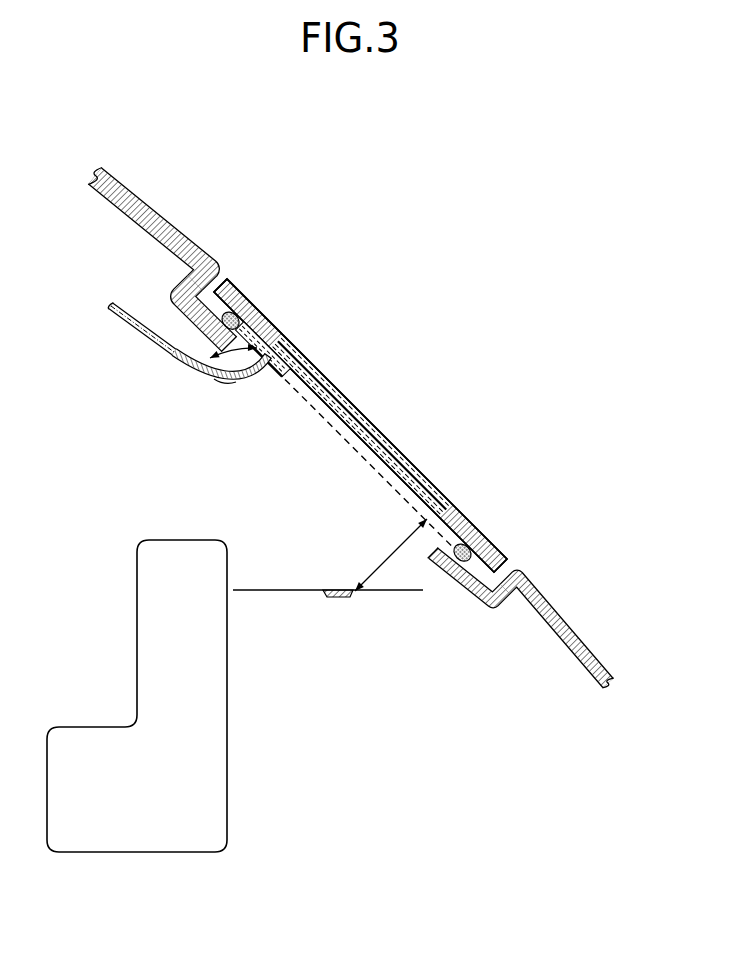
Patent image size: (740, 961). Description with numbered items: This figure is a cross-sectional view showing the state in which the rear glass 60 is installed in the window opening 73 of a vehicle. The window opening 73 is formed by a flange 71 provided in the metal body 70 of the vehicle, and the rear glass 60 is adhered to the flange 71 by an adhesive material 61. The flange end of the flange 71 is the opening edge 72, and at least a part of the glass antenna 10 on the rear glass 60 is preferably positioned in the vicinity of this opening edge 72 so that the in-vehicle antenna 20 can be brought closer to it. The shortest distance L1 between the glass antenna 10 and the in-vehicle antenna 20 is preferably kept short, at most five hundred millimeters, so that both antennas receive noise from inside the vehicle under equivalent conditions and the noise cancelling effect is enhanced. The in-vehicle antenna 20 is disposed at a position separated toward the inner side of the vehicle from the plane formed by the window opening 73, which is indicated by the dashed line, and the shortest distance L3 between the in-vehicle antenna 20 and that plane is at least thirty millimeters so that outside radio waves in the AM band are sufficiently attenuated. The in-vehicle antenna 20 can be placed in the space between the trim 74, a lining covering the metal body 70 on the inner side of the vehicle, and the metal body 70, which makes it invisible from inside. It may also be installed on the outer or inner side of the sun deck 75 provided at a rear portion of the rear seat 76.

The glass antenna 10 is at (285, 370).
The in-vehicle antenna 20 is at (200, 352).
The rear glass 60 is at (337, 385).
The adhesive material 61 is at (241, 316).
The metal body 70 is at (155, 211).
The flange 71 is at (172, 306).
The opening edge 72 is at (236, 377).
The window opening 73 is at (357, 451).
The trim 74 is at (143, 340).
The sun deck 75 is at (264, 590).
The rear seat 76 is at (137, 590).
The shortest distance between glass antenna and in-vehicle antenna L1 is at (222, 374).
The shortest distance between in-vehicle antenna and window-opening plane L3 is at (391, 555).